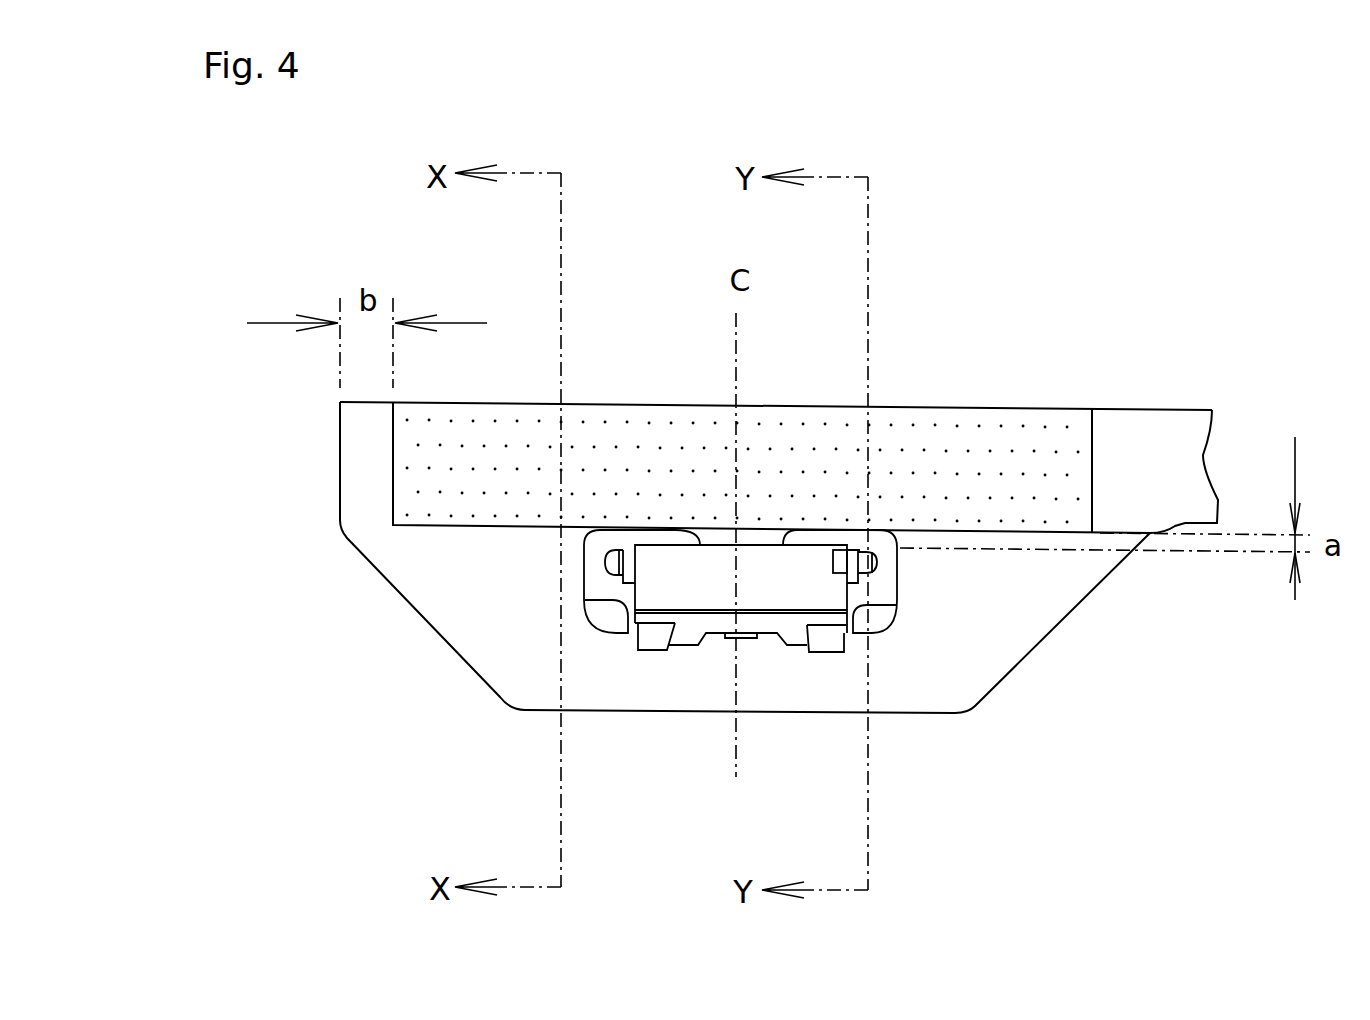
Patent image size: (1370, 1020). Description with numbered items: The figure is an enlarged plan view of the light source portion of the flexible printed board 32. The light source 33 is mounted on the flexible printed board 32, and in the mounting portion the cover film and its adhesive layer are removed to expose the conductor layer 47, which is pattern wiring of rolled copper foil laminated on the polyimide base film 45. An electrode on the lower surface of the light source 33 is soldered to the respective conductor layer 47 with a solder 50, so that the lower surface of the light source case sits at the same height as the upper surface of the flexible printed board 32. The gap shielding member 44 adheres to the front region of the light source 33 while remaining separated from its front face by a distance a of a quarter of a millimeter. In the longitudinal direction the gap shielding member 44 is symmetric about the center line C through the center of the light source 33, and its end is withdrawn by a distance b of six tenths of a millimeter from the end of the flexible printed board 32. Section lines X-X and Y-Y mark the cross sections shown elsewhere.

The flexible printed board 32 is at (430, 628).
The light source 33 is at (685, 590).
The gap shielding member 44 is at (990, 448).
The base film 45 is at (902, 630).
The conductor layer 47 is at (888, 562).
The solder 50 is at (877, 565).